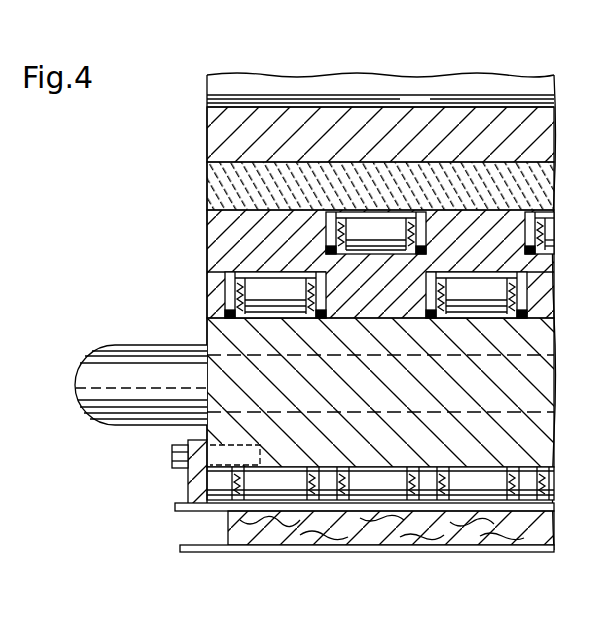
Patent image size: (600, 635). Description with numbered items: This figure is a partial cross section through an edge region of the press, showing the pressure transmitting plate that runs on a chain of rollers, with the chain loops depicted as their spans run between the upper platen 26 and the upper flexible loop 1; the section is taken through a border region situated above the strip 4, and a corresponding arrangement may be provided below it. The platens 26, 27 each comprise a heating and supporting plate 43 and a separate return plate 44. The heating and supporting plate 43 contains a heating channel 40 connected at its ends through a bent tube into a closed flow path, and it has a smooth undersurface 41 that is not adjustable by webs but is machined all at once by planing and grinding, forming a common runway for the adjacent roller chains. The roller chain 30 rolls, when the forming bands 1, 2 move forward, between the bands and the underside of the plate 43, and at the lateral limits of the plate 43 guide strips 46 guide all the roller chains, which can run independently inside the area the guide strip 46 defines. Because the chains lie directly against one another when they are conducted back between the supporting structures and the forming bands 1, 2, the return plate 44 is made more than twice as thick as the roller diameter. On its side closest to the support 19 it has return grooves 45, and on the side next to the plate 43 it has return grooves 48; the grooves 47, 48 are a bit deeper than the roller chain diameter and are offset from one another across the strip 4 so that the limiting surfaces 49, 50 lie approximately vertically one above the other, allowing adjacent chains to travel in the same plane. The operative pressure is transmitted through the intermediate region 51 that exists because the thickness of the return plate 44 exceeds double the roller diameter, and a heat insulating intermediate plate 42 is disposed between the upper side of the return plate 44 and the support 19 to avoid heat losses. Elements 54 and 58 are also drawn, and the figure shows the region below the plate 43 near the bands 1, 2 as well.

The upper flexible loop 1 is at (182, 508).
The forming band 2 is at (335, 550).
The strip 4 is at (391, 552).
The support 19 is at (285, 128).
The upper platen 26 is at (130, 254).
The platen 27 is at (184, 267).
The roller chain 30 is at (413, 525).
The heating channel 40 is at (125, 367).
The smooth undersurface 41 is at (230, 500).
The heat insulating intermediate plate 42 is at (445, 185).
The heating and supporting plate 43 is at (262, 332).
The return plate 44 is at (230, 240).
The return groove 45 is at (108, 370).
The guide strip 46 is at (180, 470).
The groove 47 is at (382, 149).
The return groove 48 is at (317, 226).
The limiting surface 49 is at (314, 262).
The limiting surface 50 is at (356, 268).
The intermediate region 51 is at (318, 264).
The flange 54 is at (190, 502).
The ring 58 is at (366, 506).